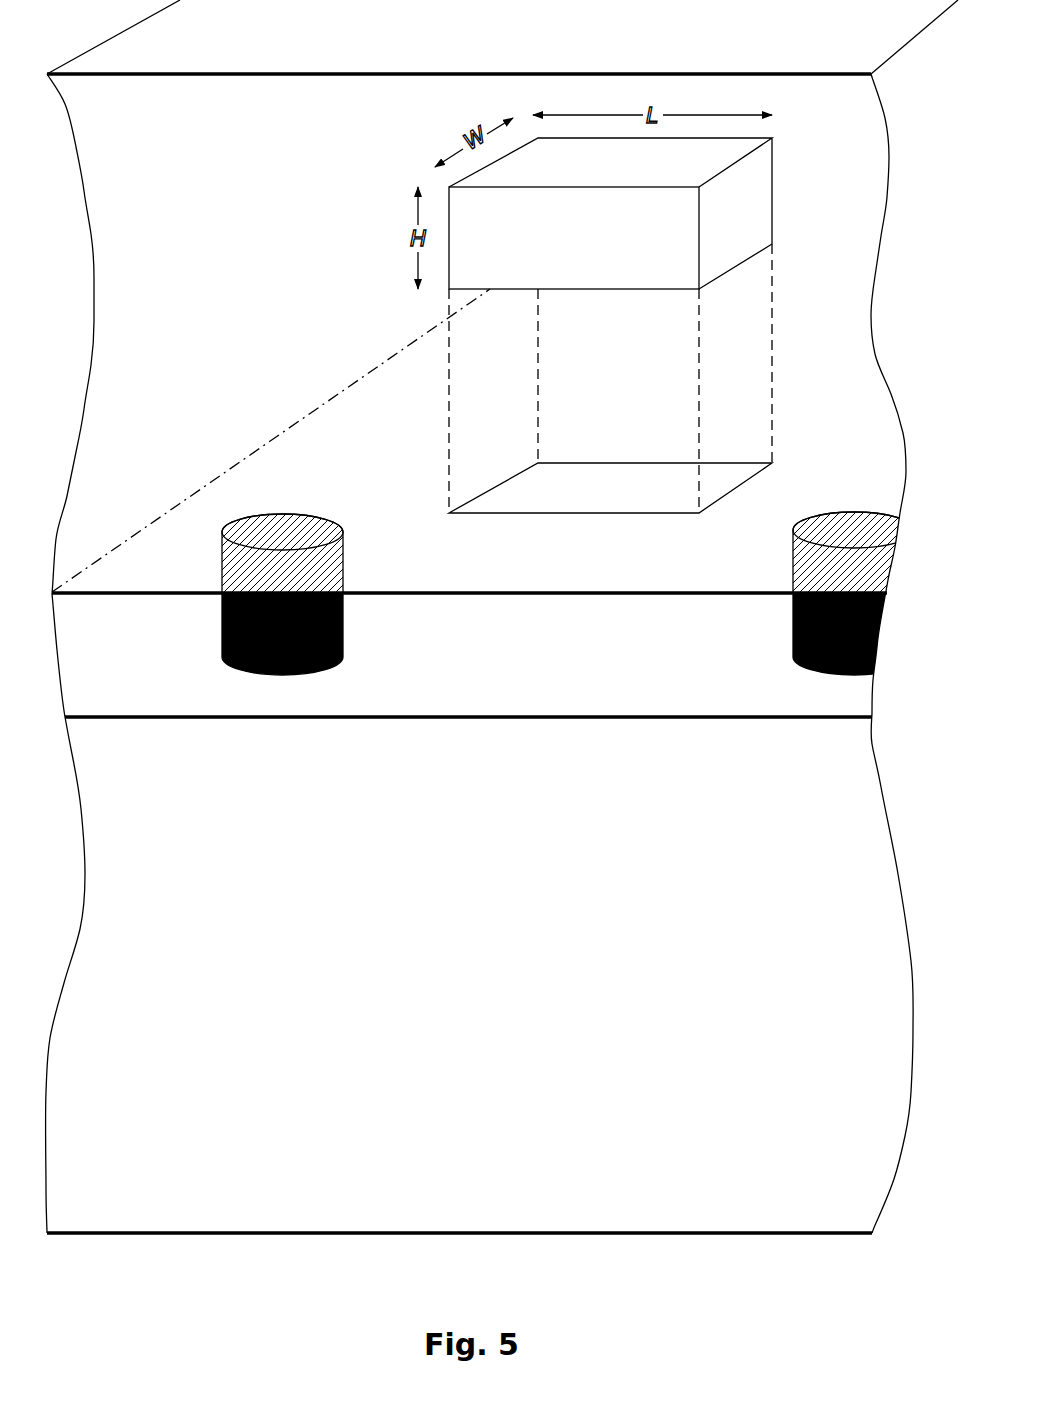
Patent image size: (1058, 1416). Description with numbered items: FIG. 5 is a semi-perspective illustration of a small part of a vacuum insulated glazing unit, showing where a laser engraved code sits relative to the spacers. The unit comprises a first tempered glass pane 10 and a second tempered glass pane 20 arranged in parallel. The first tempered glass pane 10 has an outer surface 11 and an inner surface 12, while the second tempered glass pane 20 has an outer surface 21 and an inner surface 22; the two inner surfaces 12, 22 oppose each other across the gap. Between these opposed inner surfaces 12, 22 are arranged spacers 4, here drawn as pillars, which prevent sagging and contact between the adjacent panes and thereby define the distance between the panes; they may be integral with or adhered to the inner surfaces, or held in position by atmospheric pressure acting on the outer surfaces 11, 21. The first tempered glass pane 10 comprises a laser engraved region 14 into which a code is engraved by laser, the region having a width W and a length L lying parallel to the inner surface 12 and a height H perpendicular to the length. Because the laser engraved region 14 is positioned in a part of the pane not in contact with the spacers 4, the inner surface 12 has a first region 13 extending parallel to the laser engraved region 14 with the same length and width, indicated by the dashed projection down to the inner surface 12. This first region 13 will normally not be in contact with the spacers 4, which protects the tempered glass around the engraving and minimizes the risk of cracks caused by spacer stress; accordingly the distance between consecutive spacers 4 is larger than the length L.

The first tempered glass pane 10 is at (208, 178).
The outer surface 11 is at (319, 72).
The inner surface 12 is at (546, 593).
The first region 13 is at (611, 482).
The laser engraved region 14 is at (735, 212).
The second tempered glass pane 20 is at (475, 974).
The outer surface 21 is at (514, 1233).
The inner surface 22 is at (597, 717).
The spacers 4 is at (343, 657).